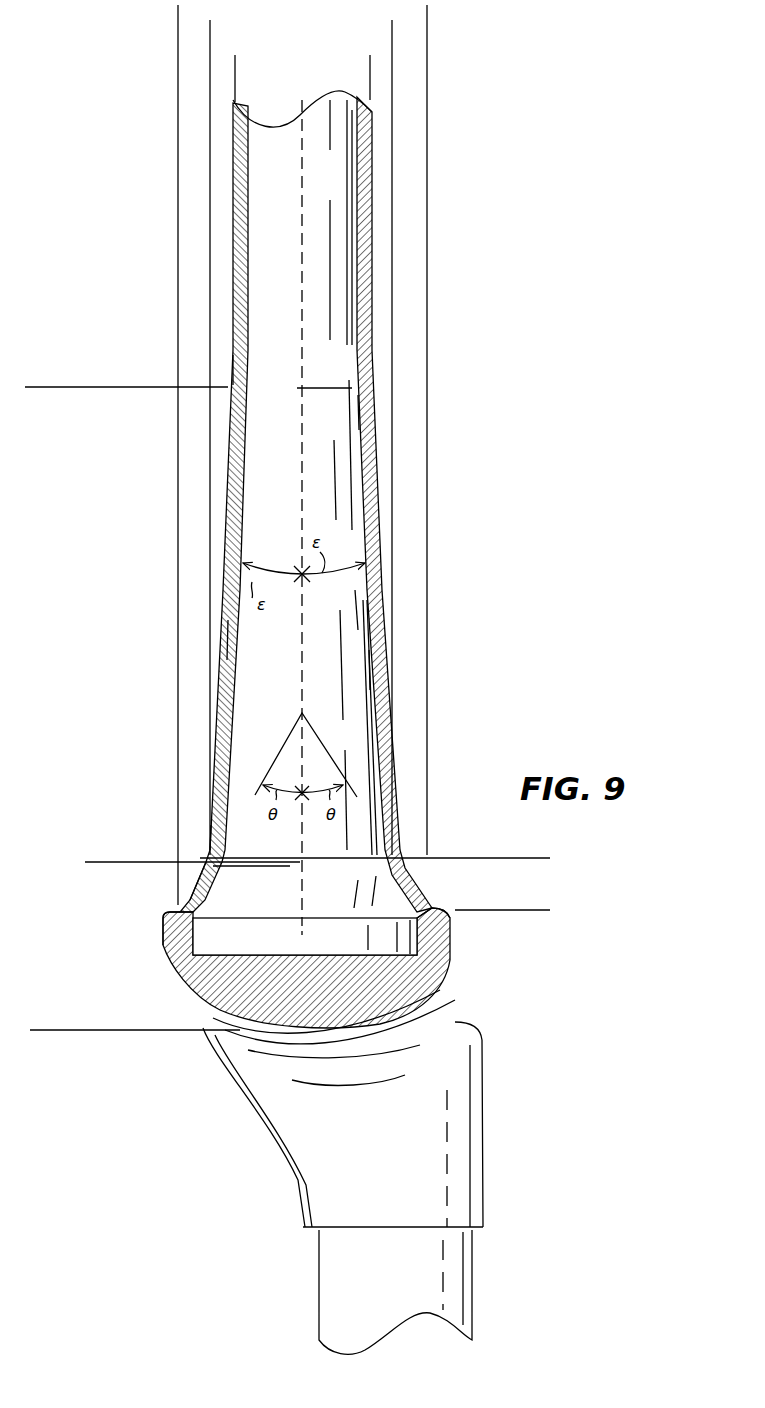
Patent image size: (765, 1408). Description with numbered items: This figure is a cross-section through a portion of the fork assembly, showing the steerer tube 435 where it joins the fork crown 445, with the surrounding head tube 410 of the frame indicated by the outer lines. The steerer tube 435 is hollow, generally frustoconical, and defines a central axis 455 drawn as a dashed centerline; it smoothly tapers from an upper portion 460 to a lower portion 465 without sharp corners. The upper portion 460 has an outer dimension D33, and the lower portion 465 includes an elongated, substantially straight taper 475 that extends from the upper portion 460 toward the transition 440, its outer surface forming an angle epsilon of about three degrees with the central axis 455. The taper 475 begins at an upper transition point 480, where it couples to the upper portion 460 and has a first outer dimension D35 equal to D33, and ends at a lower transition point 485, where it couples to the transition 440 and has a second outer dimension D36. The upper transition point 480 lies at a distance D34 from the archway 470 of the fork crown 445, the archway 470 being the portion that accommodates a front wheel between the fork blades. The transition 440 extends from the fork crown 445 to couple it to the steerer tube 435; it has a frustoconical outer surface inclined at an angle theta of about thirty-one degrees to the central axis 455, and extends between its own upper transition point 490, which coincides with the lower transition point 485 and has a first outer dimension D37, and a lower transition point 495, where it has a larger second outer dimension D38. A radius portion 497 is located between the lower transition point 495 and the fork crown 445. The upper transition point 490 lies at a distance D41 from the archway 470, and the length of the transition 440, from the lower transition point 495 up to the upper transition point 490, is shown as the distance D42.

The head tube 410 is at (232, 450).
The steerer tube 435 is at (378, 396).
The transition 440 is at (380, 893).
The fork crown 445 is at (455, 920).
The central axis 455 is at (301, 263).
The upper portion 460 is at (372, 165).
The lower portion 465 is at (382, 655).
The archway 470 is at (338, 1025).
The taper 475 is at (240, 643).
The upper transition point 480 is at (232, 360).
The lower transition point 485 is at (226, 838).
The upper transition point 490 is at (207, 887).
The lower transition point 495 is at (178, 905).
The radius portion 497 is at (430, 910).
The outer dimension D33 is at (370, 82).
The distance D34 is at (38, 1030).
The first outer dimension D35 is at (370, 62).
The second outer dimension D36 is at (392, 42).
The first outer dimension D37 is at (392, 27).
The second outer dimension D38 is at (427, 12).
The distance D41 is at (93, 862).
The distance D42 is at (533, 858).